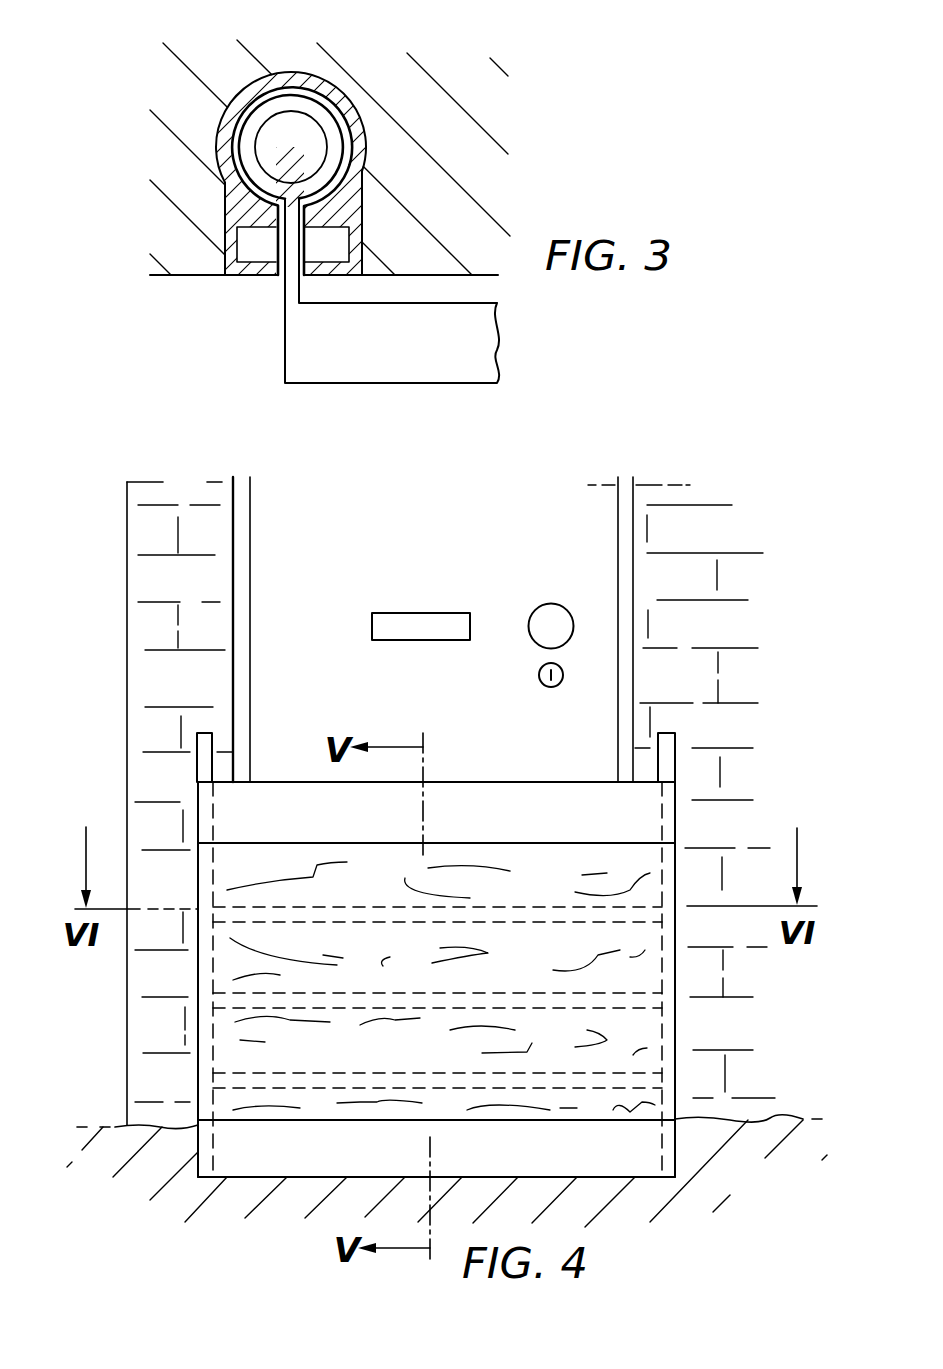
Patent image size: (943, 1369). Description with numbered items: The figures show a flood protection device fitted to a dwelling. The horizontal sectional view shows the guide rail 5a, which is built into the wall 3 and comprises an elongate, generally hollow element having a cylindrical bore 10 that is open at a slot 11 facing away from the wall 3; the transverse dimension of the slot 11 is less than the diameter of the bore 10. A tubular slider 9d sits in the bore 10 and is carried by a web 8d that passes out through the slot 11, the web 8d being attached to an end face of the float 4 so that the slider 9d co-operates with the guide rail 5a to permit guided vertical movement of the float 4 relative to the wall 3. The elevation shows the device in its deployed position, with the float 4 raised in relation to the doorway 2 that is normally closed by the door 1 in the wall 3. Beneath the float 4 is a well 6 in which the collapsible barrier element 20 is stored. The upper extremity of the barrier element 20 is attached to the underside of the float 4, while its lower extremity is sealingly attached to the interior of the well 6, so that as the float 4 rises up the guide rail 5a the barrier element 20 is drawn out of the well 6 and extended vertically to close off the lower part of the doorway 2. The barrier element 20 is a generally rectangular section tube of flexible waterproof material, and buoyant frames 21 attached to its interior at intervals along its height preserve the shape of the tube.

In FIG. 4, the door 1 is at (403, 583).
In FIG. 4, the doorway 2 is at (238, 574).
In FIG. 4, the wall 3 is at (182, 680).
In FIG. 3, the float 4 is at (427, 363).
In FIG. 4, the float 4 is at (528, 830).
In FIG. 3, the guide rail 5a is at (353, 208).
In FIG. 4, the well 6 is at (560, 1163).
In FIG. 3, the web 8d is at (290, 248).
In FIG. 3, the tubular slider 9d is at (260, 110).
In FIG. 3, the cylindrical bore 10 is at (310, 77).
In FIG. 3, the slot 11 is at (283, 278).
In FIG. 4, the barrier element 20 is at (492, 972).
In FIG. 4, the frames 21 is at (331, 913).